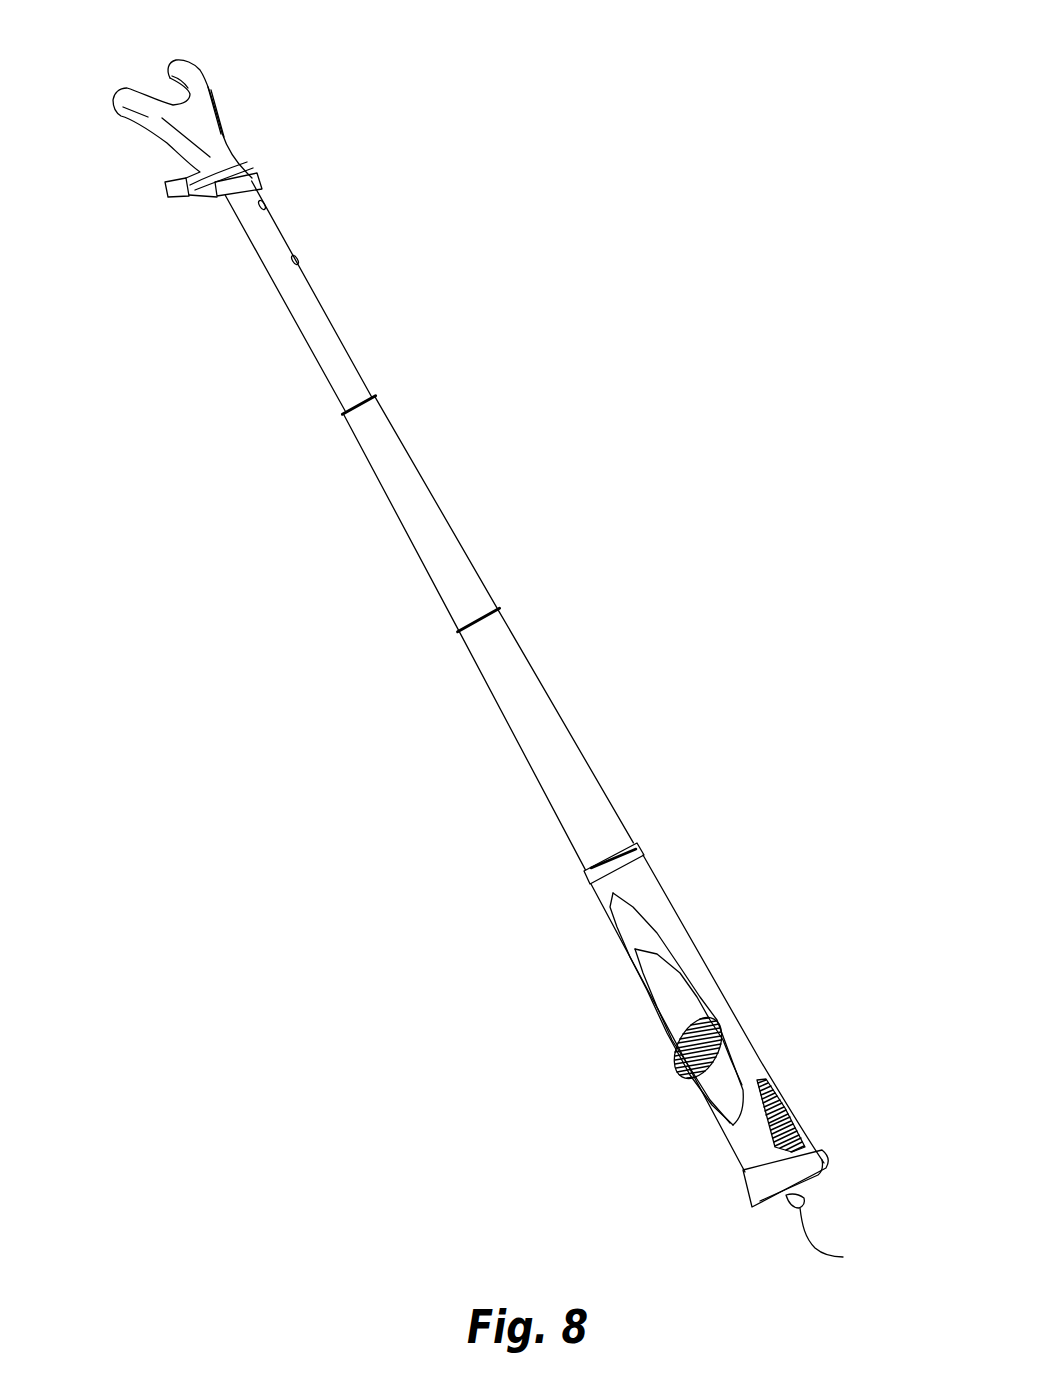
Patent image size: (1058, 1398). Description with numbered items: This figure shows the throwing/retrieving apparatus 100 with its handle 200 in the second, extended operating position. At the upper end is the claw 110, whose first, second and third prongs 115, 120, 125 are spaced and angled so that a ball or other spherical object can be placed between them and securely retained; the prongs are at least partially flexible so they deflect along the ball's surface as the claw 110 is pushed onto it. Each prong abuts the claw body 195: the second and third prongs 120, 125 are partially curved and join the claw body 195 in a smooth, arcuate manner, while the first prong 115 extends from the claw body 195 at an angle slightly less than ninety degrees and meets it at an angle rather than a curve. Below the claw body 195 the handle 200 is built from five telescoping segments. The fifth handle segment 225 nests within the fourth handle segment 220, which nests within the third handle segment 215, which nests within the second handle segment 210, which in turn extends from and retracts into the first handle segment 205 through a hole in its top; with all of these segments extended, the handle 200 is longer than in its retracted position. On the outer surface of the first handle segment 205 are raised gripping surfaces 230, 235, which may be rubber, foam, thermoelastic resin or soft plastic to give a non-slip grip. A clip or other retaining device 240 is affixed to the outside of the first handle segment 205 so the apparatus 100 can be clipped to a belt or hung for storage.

The throwing/retrieving apparatus 100 is at (502, 367).
The claw 110 is at (232, 127).
The first prong 115 is at (194, 200).
The second prong 120 is at (191, 63).
The third prong 125 is at (130, 88).
The claw body 195 is at (262, 172).
The handle 200 is at (707, 963).
The first handle segment 205 is at (663, 887).
The second handle segment 210 is at (551, 695).
The third handle segment 215 is at (456, 533).
The fourth handle segment 220 is at (366, 380).
The fifth handle segment 225 is at (293, 246).
The gripping surface 230 is at (680, 1057).
The gripping surface 235 is at (801, 1115).
The retaining device 240 is at (842, 1232).